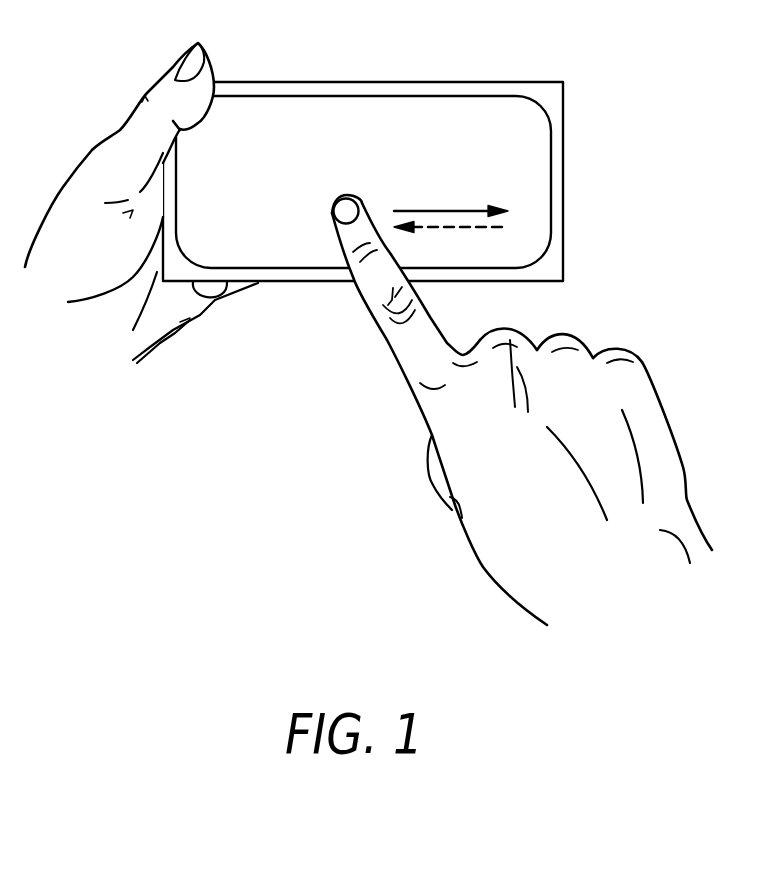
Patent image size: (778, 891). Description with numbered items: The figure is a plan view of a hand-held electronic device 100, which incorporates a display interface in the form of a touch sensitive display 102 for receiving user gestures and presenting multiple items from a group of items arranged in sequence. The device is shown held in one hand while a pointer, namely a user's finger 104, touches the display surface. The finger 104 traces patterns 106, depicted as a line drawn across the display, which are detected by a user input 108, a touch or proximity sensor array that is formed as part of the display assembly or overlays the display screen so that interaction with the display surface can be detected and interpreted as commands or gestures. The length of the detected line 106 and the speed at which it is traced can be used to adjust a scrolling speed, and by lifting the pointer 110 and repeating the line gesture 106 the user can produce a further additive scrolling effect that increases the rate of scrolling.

The electronic device 100 is at (421, 144).
The touch sensitive display 102 is at (543, 150).
The user's finger 104 is at (335, 208).
The patterns 106 is at (448, 208).
The user input 108 is at (543, 180).
The lifting the pointer 110 is at (472, 228).